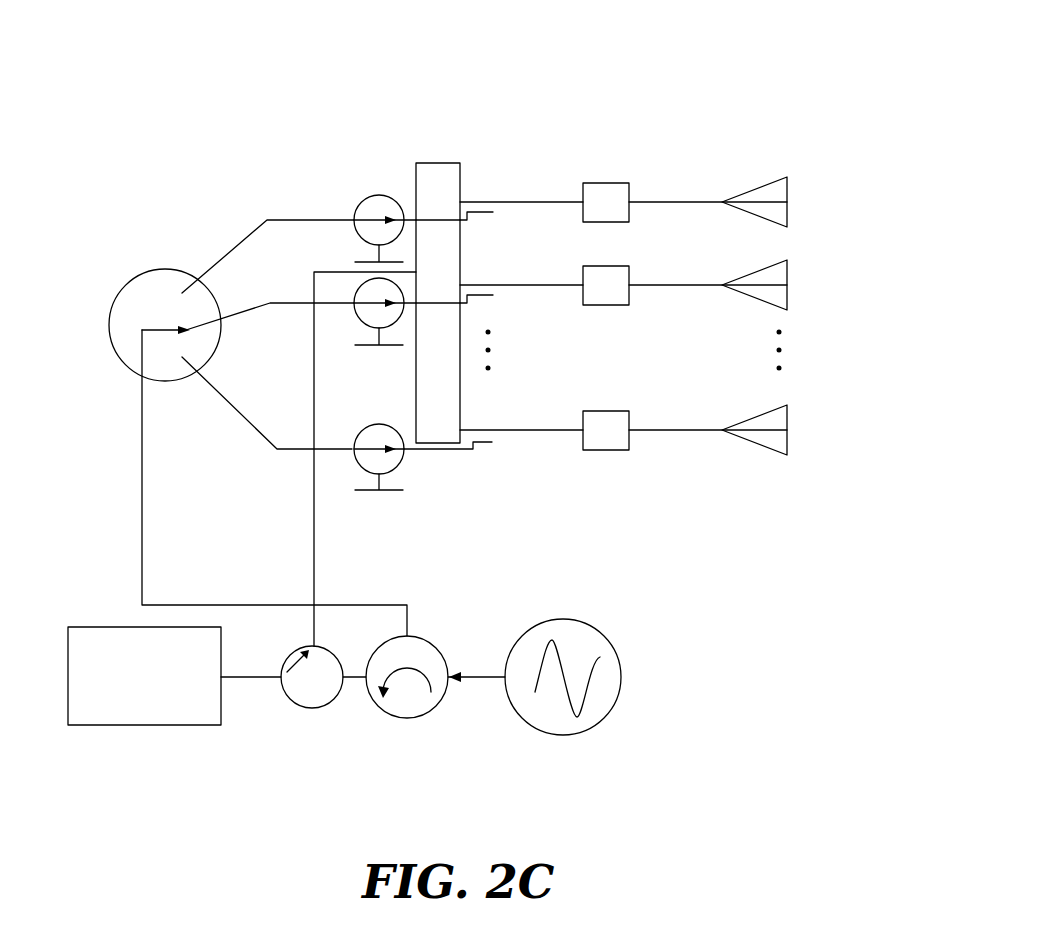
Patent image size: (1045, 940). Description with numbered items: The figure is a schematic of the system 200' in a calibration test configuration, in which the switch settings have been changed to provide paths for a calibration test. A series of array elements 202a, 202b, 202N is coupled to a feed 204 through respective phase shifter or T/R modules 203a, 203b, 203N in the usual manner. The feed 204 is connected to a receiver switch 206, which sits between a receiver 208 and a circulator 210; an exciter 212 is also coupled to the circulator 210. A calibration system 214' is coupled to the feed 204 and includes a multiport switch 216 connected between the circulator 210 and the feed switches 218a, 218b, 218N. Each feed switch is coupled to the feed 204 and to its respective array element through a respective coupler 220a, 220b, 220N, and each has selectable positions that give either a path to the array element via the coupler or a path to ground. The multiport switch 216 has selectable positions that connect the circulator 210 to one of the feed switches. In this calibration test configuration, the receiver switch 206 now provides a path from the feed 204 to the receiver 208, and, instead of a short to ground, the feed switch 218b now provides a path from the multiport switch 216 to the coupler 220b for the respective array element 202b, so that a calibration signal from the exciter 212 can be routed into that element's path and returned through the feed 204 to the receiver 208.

The system 200' is at (638, 38).
The array element 202a is at (770, 180).
The array element 202b is at (770, 263).
The array element 202N is at (770, 408).
The phase shifter or T/R module 203a is at (605, 183).
The phase shifter or T/R module 203b is at (605, 266).
The phase shifter or T/R module 203N is at (605, 411).
The feed 204 is at (437, 163).
The receiver switch 206 is at (312, 710).
The receiver 208 is at (157, 730).
The circulator 210 is at (407, 718).
The exciter 212 is at (563, 735).
The calibration system 214' is at (279, 448).
The multiport switch 216 is at (112, 345).
The feed switch 218a is at (380, 196).
The feed switch 218b is at (360, 320).
The feed switch 218N is at (378, 424).
The coupler 220a is at (480, 215).
The coupler 220b is at (480, 298).
The coupler 220N is at (478, 445).